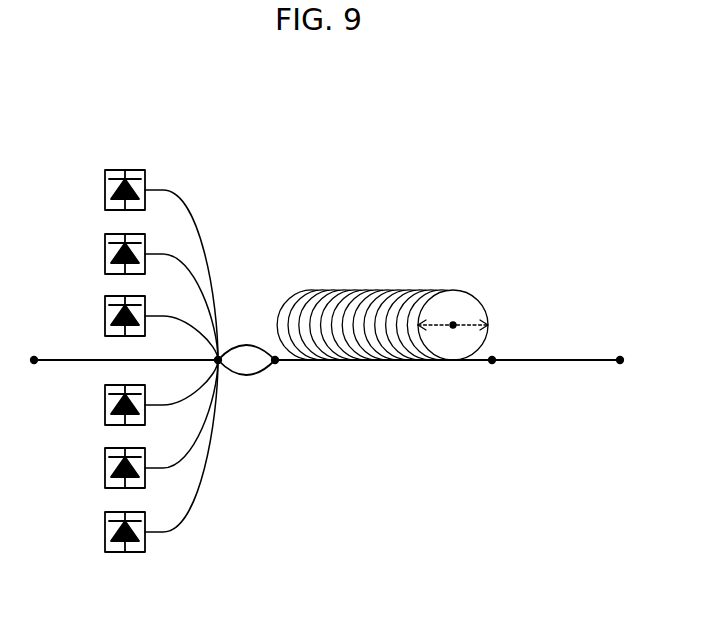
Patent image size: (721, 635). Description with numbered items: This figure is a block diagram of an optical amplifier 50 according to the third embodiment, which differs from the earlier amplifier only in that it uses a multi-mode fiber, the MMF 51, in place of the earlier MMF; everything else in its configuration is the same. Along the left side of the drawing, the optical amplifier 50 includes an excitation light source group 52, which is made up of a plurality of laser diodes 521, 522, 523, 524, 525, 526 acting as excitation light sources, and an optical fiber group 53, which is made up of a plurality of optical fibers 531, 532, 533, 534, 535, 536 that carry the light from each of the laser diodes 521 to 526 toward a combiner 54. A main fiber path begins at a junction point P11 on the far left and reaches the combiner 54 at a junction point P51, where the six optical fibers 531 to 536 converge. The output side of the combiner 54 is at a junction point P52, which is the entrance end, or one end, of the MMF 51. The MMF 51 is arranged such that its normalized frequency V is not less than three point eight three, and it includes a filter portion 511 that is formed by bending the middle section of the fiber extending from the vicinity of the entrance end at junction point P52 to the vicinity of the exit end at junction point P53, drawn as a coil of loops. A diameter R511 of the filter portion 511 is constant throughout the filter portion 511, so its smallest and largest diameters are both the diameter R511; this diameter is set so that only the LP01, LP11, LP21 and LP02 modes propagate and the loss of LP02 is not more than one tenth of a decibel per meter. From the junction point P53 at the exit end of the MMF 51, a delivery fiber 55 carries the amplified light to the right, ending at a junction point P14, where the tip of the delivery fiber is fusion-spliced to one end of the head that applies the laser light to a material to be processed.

The optical amplifier 50 is at (566, 117).
The multi-mode fiber 51 is at (451, 234).
The filter portion 511 is at (380, 290).
The diameter of the filter portion R511 is at (453, 315).
The excitation light source group 52 is at (132, 130).
The laser diode 521 is at (105, 185).
The laser diode 522 is at (105, 250).
The laser diode 523 is at (105, 312).
The laser diode 524 is at (106, 408).
The laser diode 525 is at (106, 472).
The laser diode 526 is at (106, 535).
The optical fiber group 53 is at (191, 130).
The optical fiber 531 is at (163, 189).
The optical fiber 532 is at (163, 253).
The optical fiber 533 is at (163, 315).
The optical fiber 534 is at (165, 407).
The optical fiber 535 is at (165, 470).
The optical fiber 536 is at (165, 534).
The combiner 54 is at (246, 343).
The delivery fiber 55 is at (557, 357).
The junction point P11 is at (34, 365).
The junction point P51 is at (220, 365).
The junction point P52 is at (276, 365).
The junction point P53 is at (492, 365).
The junction point P14 is at (620, 365).